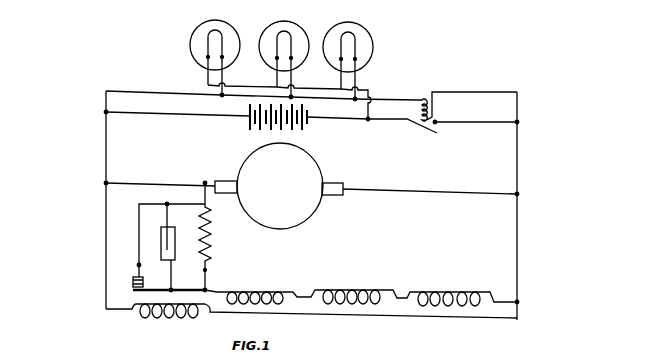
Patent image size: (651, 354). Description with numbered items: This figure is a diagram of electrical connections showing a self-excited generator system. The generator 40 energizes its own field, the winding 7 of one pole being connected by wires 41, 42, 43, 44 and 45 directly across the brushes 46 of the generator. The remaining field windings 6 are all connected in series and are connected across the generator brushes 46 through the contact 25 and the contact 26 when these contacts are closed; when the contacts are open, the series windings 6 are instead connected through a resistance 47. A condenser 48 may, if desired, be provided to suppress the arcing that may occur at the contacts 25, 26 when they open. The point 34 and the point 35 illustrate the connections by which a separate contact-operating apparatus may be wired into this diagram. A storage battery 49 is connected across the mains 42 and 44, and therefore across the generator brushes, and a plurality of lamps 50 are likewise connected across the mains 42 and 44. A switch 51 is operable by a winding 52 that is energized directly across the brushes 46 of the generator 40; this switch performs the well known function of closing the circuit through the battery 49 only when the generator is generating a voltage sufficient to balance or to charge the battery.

The windings 6 is at (258, 290).
The winding 7 is at (183, 319).
The contact 25 is at (133, 288).
The contact 26 is at (133, 276).
The point 34 is at (172, 289).
The point 35 is at (139, 265).
The generator 40 is at (306, 214).
The wire 41 is at (412, 315).
The main 42 is at (517, 237).
The wire 43 is at (442, 191).
The main 44 is at (105, 245).
The wire 45 is at (150, 182).
The brushes 46 is at (232, 181).
The resistance 47 is at (212, 253).
The condenser 48 is at (164, 252).
The storage battery 49 is at (309, 122).
The lamps 50 is at (231, 36).
The switch 51 is at (421, 128).
The winding 52 is at (417, 114).